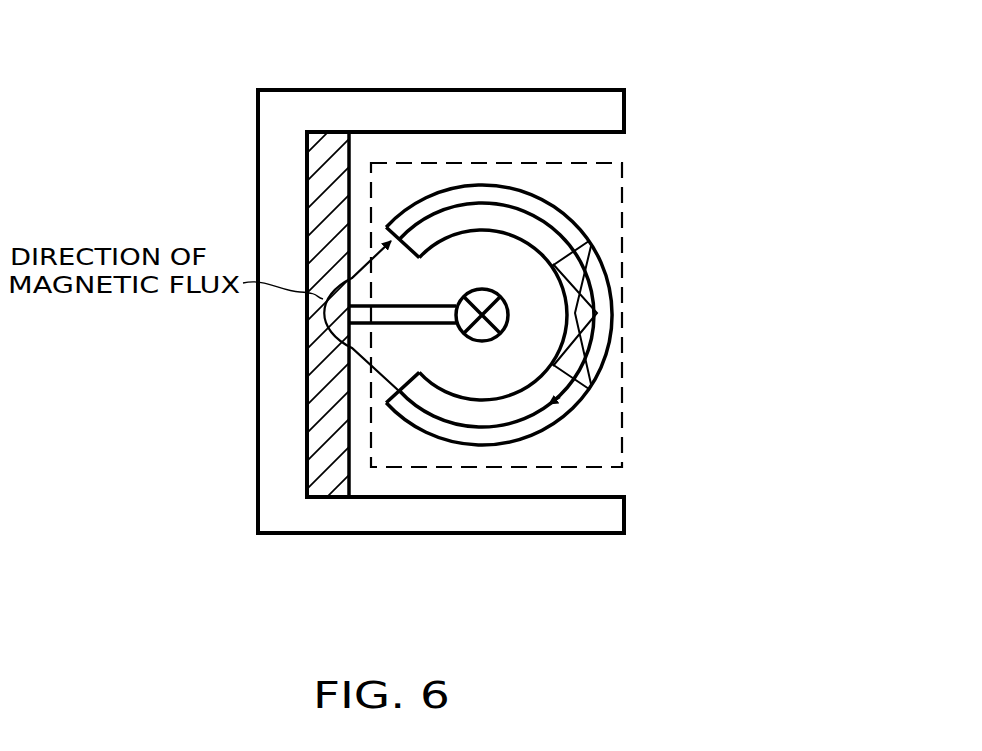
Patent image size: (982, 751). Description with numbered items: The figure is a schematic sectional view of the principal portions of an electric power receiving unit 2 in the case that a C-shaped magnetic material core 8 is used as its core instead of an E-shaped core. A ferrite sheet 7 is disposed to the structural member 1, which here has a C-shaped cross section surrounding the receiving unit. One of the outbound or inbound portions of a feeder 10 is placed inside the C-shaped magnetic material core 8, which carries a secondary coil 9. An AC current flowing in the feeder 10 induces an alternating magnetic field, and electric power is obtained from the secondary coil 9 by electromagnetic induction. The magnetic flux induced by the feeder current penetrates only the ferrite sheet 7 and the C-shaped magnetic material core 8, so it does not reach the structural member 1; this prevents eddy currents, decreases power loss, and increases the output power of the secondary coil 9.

The structural member 1 is at (353, 90).
The electric power receiving unit 2 is at (623, 418).
The ferrite sheet 7 is at (309, 431).
The C-shaped magnetic material core 8 is at (577, 221).
The secondary coil 9 is at (605, 287).
The feeder 10 is at (508, 316).